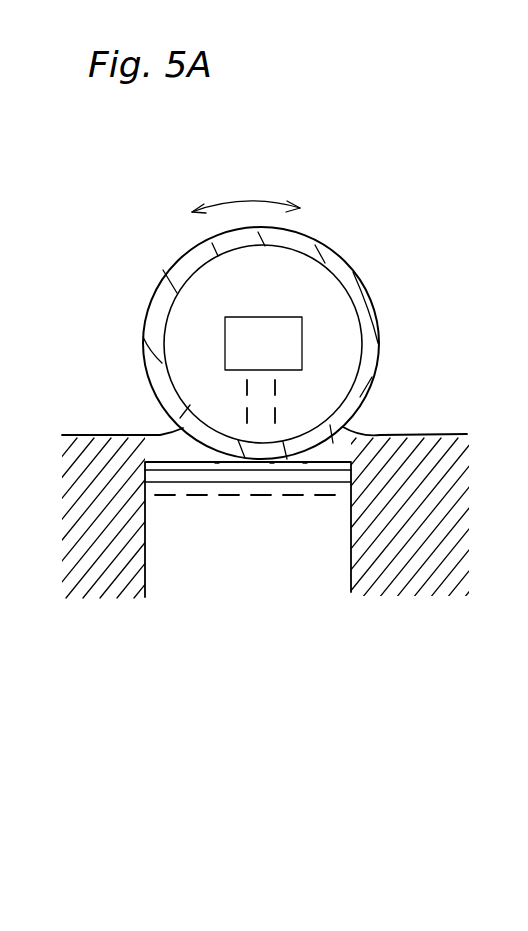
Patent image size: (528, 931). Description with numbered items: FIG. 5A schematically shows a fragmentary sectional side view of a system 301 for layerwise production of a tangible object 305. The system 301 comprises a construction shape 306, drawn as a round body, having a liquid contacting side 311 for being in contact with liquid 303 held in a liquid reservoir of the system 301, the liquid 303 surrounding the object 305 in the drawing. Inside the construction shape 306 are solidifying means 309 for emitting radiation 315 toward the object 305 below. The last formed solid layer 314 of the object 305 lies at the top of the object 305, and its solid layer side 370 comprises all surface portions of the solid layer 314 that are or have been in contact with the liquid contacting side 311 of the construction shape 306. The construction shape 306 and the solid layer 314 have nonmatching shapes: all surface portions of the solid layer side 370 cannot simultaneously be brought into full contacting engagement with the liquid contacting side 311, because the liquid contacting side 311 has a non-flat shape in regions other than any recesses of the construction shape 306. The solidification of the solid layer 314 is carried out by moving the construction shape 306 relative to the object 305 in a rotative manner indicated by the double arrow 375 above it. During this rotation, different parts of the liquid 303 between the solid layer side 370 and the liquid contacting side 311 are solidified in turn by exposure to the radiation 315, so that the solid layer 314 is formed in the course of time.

The system 301 is at (418, 172).
The liquid 303 is at (417, 571).
The tangible object 305 is at (187, 600).
The construction shape 306 is at (372, 367).
The solidifying means 309 is at (277, 330).
The liquid contacting side 311 is at (217, 465).
The solid layer 314 is at (305, 465).
The radiation 315 is at (275, 388).
The solid layer side 370 is at (272, 465).
The double arrow 375 is at (246, 187).